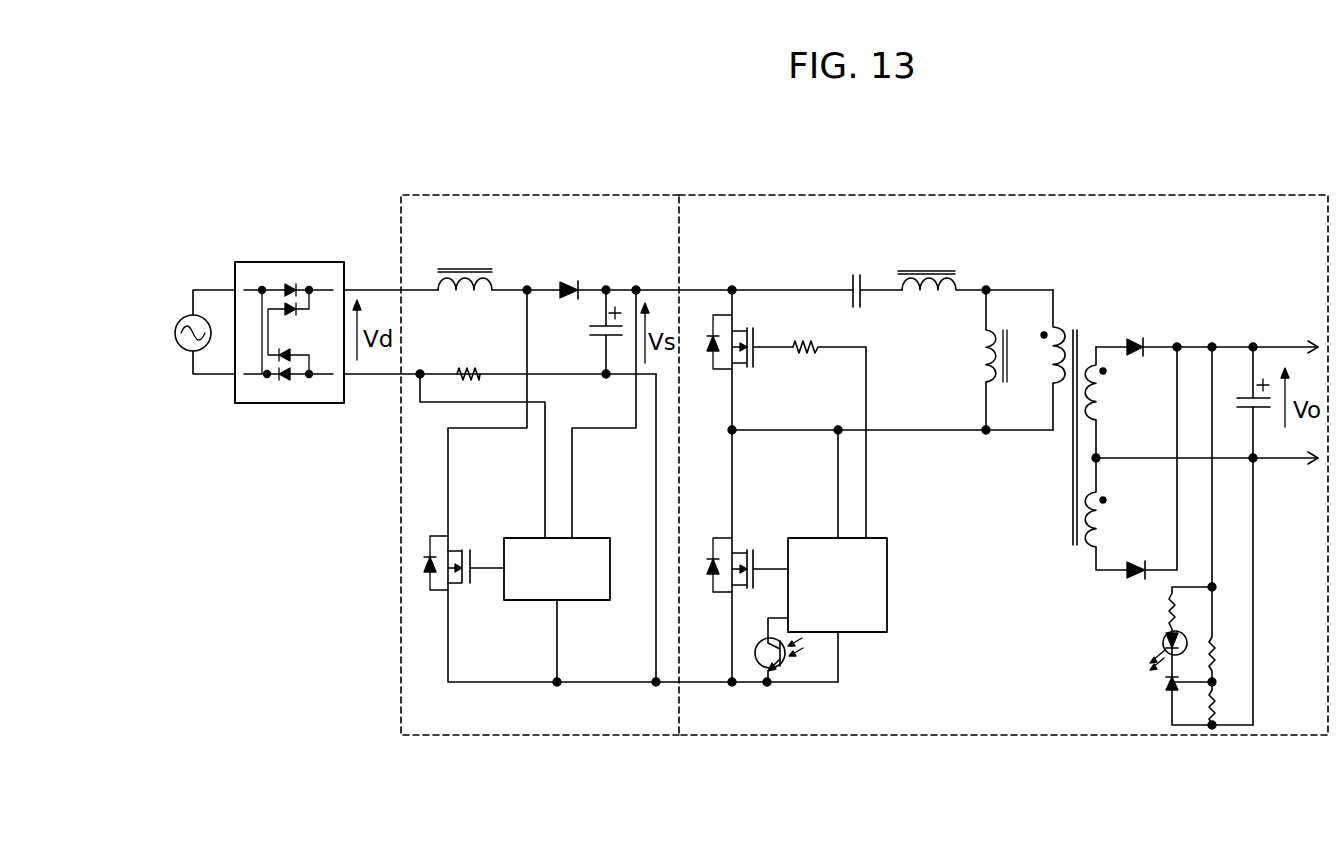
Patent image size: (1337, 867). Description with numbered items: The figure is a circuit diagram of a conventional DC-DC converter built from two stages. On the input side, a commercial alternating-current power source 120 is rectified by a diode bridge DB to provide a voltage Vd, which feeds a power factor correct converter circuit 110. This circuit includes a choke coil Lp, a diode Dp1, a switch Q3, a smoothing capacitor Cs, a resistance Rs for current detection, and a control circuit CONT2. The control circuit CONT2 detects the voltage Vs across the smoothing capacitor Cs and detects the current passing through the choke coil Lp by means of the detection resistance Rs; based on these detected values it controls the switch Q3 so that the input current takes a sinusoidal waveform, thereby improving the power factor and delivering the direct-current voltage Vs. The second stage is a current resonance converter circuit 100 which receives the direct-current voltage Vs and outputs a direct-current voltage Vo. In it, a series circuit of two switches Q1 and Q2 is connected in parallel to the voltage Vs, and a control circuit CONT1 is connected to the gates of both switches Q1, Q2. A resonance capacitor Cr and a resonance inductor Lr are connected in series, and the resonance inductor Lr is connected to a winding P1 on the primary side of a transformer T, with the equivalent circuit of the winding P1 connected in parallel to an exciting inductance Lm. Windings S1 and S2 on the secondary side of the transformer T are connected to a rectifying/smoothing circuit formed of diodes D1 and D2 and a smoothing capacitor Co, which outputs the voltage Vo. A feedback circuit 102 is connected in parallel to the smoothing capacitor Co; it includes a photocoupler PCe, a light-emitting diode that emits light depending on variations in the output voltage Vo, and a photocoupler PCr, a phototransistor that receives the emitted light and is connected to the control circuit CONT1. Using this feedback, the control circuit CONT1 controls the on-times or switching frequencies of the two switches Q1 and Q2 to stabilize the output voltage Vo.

The commercial alternating-current power source 120 is at (183, 316).
The power factor correct converter circuit 110 is at (542, 195).
The current resonance converter circuit 100 is at (984, 195).
The feedback circuit 102 is at (1205, 636).
The diode bridge DB is at (298, 316).
The choke coil Lp is at (465, 264).
The diode Dp1 is at (570, 276).
The smoothing capacitor Cs is at (589, 332).
The resistance for current detection Rs is at (475, 360).
The switch Q3 is at (464, 555).
The control circuit CONT2 is at (557, 610).
The switch Q2 is at (786, 486).
The switch Q1 is at (747, 556).
The control circuit CONT1 is at (837, 610).
The photocoupler (phototransistor) PCr is at (779, 669).
The resonance capacitor Cr is at (872, 278).
The resonance inductor Lr is at (975, 268).
The exciting inductance Lm is at (979, 360).
The winding on primary side P1 is at (1042, 360).
The transformer T is at (1077, 421).
The winding on secondary side S1 is at (1108, 402).
The winding on secondary side S2 is at (1108, 514).
The diode D1 is at (1207, 364).
The diode D2 is at (1149, 463).
The smoothing capacitor Co is at (1244, 389).
The photocoupler (light-emitting diode) PCe is at (1146, 637).